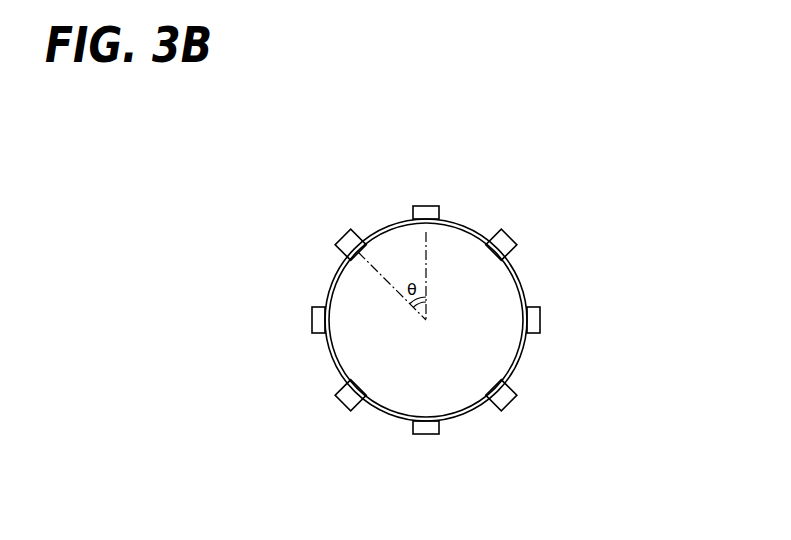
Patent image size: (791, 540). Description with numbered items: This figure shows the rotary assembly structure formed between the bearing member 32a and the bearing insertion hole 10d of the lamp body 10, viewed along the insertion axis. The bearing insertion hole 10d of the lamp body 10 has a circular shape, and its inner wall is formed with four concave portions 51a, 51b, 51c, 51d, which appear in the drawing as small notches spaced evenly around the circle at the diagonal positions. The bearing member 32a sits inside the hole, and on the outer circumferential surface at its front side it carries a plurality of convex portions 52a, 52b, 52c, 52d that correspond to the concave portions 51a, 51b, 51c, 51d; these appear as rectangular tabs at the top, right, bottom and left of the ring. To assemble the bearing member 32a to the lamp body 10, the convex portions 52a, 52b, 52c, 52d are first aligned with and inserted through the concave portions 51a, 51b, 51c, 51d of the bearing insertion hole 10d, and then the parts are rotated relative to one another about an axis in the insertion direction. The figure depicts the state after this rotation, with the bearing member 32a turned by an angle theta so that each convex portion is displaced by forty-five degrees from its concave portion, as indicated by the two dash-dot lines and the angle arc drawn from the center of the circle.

The lamp body 10 is at (425, 319).
The bearing insertion hole 10d is at (387, 227).
The bearing member 32a is at (495, 285).
The concave portion 51a is at (352, 240).
The concave portion 51b is at (507, 237).
The concave portion 51c is at (513, 403).
The concave portion 51d is at (342, 402).
The convex portion 52a is at (425, 207).
The convex portion 52b is at (537, 318).
The convex portion 52c is at (428, 430).
The convex portion 52d is at (313, 319).